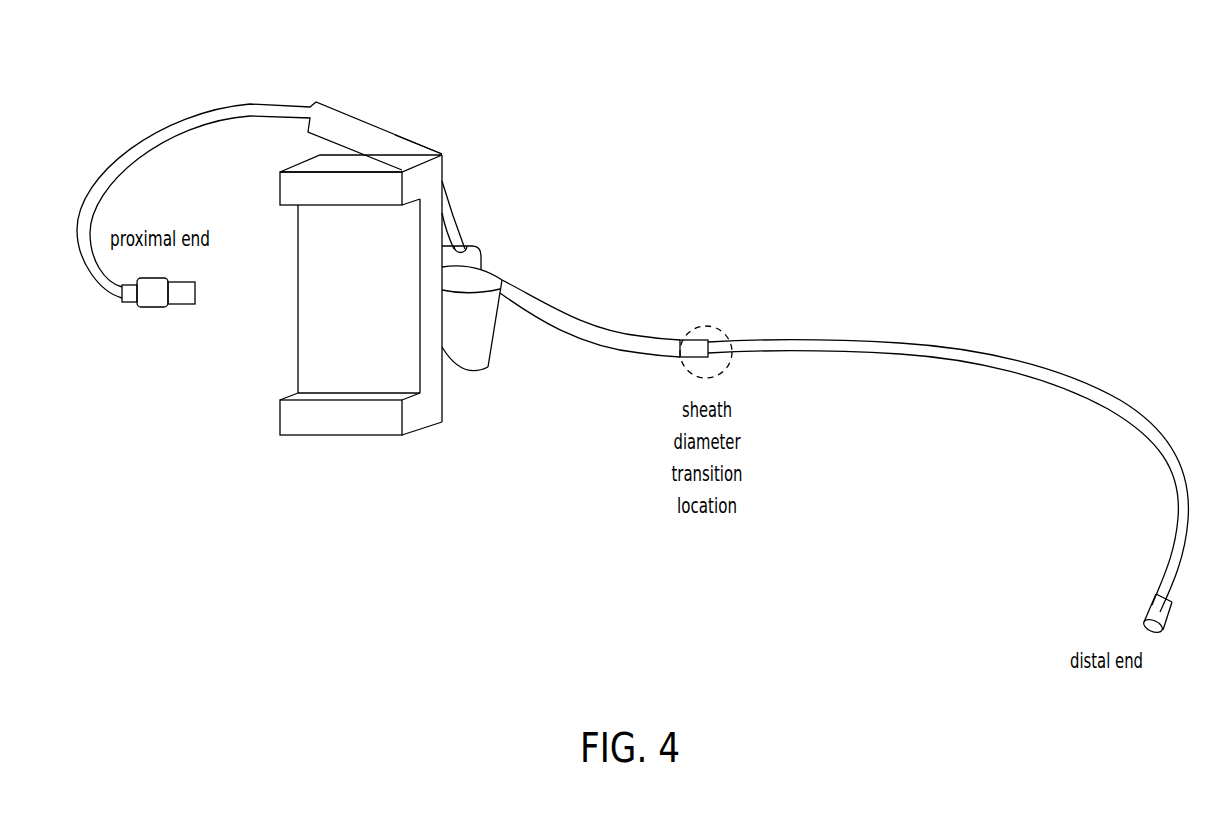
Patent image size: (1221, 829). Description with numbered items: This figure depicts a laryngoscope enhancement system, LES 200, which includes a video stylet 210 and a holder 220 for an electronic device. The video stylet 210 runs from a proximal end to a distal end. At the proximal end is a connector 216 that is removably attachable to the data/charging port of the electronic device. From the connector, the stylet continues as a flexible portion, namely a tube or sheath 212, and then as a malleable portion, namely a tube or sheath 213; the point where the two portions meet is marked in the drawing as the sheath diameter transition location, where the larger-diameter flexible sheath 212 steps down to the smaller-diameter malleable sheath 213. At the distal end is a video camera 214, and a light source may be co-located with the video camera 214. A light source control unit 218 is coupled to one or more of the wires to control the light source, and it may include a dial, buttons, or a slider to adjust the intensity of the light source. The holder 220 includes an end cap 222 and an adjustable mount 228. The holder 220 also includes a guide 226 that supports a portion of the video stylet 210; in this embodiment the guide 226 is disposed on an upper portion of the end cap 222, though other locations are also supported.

The laryngoscope enhancement system 200 is at (750, 108).
The video stylet 210 is at (603, 287).
The sheath 212 is at (612, 328).
The sheath 213 is at (945, 358).
The video camera 214 is at (1147, 617).
The connector 216 is at (147, 307).
The light source control unit 218 is at (362, 118).
The holder 220 is at (480, 425).
The end cap 222 is at (500, 277).
The guide 226 is at (470, 245).
The adjustable mount 228 is at (442, 152).